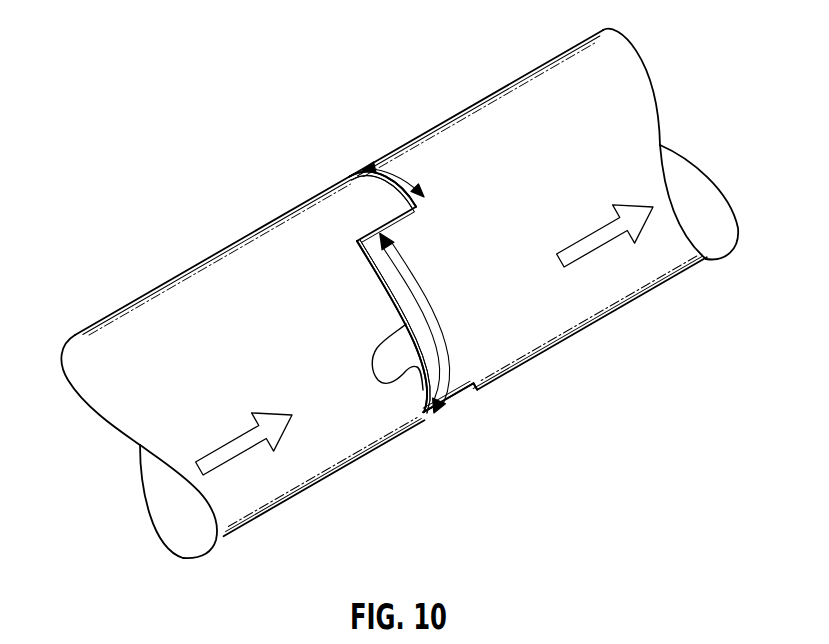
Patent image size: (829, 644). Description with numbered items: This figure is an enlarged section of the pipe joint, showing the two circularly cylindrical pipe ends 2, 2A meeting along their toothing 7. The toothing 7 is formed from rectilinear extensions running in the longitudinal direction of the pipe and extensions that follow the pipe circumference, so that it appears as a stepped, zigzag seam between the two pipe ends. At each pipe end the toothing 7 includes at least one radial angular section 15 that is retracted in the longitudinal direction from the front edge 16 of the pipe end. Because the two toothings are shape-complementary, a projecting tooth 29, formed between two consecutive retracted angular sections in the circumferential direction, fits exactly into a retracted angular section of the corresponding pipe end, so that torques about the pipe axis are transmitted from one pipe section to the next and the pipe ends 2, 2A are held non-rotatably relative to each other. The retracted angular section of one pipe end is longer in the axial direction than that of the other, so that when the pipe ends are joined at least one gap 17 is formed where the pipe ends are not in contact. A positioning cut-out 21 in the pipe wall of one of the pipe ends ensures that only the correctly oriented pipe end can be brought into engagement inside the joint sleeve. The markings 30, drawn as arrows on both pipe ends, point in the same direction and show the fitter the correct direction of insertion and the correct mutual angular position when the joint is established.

The pipe end 2 is at (140, 353).
The pipe end 2A is at (552, 117).
The toothing 7 is at (384, 226).
The radial angular section 15 is at (398, 179).
The front edge 16 is at (387, 277).
The gap 17 is at (433, 416).
The positioning cut-out 21 is at (376, 352).
The projecting tooth 29 is at (426, 286).
The markings 30 is at (231, 441).